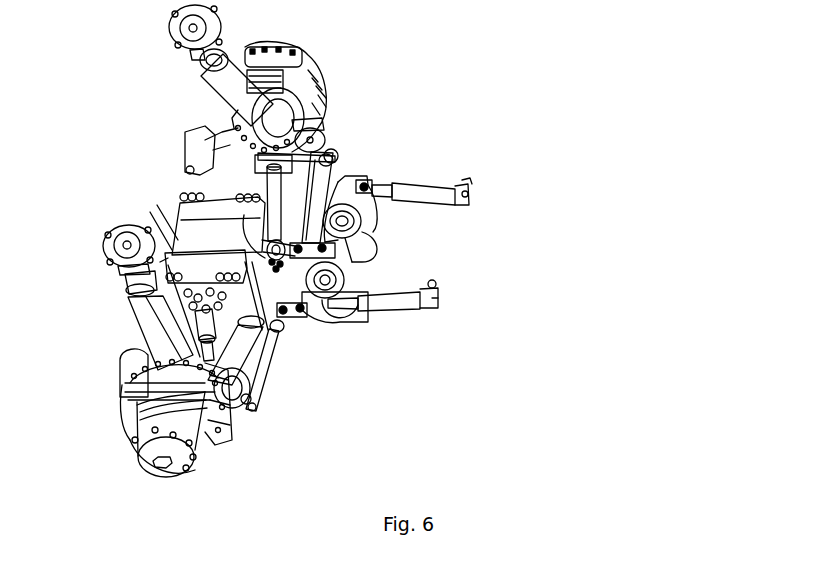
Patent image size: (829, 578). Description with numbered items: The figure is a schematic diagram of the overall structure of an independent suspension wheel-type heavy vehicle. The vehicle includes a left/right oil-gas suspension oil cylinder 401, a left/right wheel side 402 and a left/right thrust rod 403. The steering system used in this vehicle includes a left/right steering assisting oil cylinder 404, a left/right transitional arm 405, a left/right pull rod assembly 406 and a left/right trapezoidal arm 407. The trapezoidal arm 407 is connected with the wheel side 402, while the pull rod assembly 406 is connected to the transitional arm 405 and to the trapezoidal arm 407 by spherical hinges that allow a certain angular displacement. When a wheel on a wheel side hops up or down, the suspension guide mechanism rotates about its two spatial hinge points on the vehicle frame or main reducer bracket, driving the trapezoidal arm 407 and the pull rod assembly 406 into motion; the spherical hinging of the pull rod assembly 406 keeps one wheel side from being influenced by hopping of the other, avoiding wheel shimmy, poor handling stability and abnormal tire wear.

The left/right oil-gas suspension oil cylinder 401 is at (252, 110).
The left/right wheel side 402 is at (252, 79).
The left/right thrust rod 403 is at (283, 187).
The left/right steering assisting oil cylinder 404 is at (428, 193).
The left/right transitional arm 405 is at (394, 188).
The left/right pull rod assembly 406 is at (330, 183).
The left/right trapezoidal arm 407 is at (312, 157).